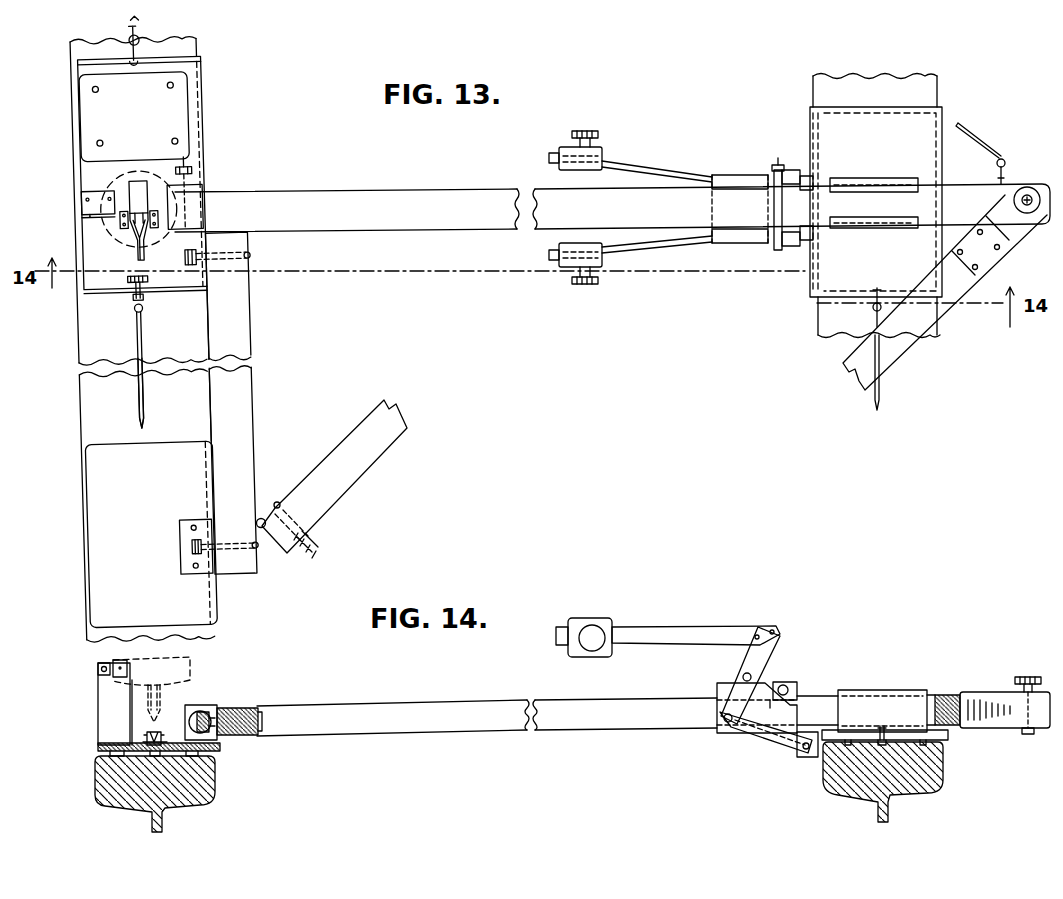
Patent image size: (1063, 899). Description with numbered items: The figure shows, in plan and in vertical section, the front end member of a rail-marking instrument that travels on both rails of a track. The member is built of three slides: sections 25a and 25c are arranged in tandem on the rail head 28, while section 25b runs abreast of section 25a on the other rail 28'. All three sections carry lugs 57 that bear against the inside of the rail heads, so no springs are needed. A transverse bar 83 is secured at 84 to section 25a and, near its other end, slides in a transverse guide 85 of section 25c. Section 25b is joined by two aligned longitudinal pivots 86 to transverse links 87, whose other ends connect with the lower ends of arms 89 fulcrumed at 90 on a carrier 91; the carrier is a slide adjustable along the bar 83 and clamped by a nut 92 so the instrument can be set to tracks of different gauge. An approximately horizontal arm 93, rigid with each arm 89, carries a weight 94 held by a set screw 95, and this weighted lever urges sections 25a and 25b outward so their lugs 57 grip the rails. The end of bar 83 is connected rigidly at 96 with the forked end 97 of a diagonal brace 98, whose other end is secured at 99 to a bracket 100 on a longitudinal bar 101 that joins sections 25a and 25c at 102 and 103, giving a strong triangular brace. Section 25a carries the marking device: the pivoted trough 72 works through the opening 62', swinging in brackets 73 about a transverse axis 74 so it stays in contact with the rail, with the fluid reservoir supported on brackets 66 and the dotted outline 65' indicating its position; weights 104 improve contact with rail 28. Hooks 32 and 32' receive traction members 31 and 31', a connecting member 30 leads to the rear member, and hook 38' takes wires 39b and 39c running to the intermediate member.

In FIG. 13, the rail head 28 is at (122, 340).
In FIG. 13, the other rail 28' is at (892, 205).
In FIG. 14, the other rail 28' is at (898, 782).
In FIG. 13, the front member section 25a is at (103, 284).
In FIG. 14, the front member section 25a is at (112, 745).
In FIG. 13, the front member section 25b is at (876, 202).
In FIG. 14, the front member section 25b is at (948, 745).
In FIG. 13, the front member section 25c is at (151, 534).
In FIG. 13, the connecting member 30 is at (134, 341).
In FIG. 13, the traction member 31 is at (181, 31).
In FIG. 13, the traction member 31' is at (984, 137).
In FIG. 13, the hook 32 is at (149, 45).
In FIG. 13, the hook 32' is at (1018, 171).
In FIG. 13, the hook 38' is at (852, 307).
In FIG. 14, the hook 38' is at (867, 723).
In FIG. 13, the wire 39b is at (133, 407).
In FIG. 13, the wire 39c is at (880, 391).
In FIG. 13, the lugs 57 is at (813, 289).
In FIG. 13, the opening 62' is at (132, 205).
In FIG. 14, the nozzle arm 65' is at (174, 670).
In FIG. 13, the brackets 66 is at (76, 199).
In FIG. 14, the brackets 66 is at (100, 695).
In FIG. 13, the trough 72 is at (127, 241).
In FIG. 14, the trough 72 is at (156, 740).
In FIG. 13, the brackets 73 is at (113, 231).
In FIG. 13, the axis 74 is at (148, 232).
In FIG. 13, the transverse bar 83 is at (612, 208).
In FIG. 14, the transverse bar 83 is at (596, 715).
In FIG. 13, the securing connection 84 is at (190, 205).
In FIG. 13, the transverse guide 85 is at (872, 178).
In FIG. 14, the transverse guide 85 is at (878, 690).
In FIG. 13, the longitudinal pivots 86 is at (806, 175).
In FIG. 14, the longitudinal pivots 86 is at (800, 760).
In FIG. 13, the transverse links 87 is at (777, 168).
In FIG. 14, the transverse links 87 is at (768, 742).
In FIG. 13, the arms 89 is at (728, 175).
In FIG. 14, the arms 89 is at (764, 655).
In FIG. 14, the fulcrum 90 is at (743, 675).
In FIG. 13, the carrier 91 is at (748, 184).
In FIG. 14, the carrier 91 is at (727, 688).
In FIG. 13, the clamping nut 92 is at (773, 172).
In FIG. 14, the clamping nut 92 is at (788, 683).
In FIG. 13, the horizontal arm 93 is at (661, 168).
In FIG. 14, the horizontal arm 93 is at (668, 628).
In FIG. 13, the weight 94 is at (603, 160).
In FIG. 14, the weight 94 is at (593, 624).
In FIG. 13, the set screw 95 is at (600, 134).
In FIG. 14, the set screw 95 is at (591, 644).
In FIG. 13, the rigid connection 96 is at (1028, 213).
In FIG. 14, the rigid connection 96 is at (1027, 677).
In FIG. 13, the forked end 97 is at (1004, 241).
In FIG. 14, the forked end 97 is at (1008, 733).
In FIG. 14, the diagonal brace 98 is at (946, 694).
In FIG. 13, the rigid connection 99 is at (314, 541).
In FIG. 13, the bracket 100 is at (268, 514).
In FIG. 13, the longitudinal bar 101 is at (232, 311).
In FIG. 14, the longitudinal bar 101 is at (238, 710).
In FIG. 13, the securing connection 102 is at (177, 270).
In FIG. 14, the securing connection 102 is at (201, 709).
In FIG. 13, the securing connection 103 is at (172, 557).
In FIG. 13, the weights 104 is at (134, 117).